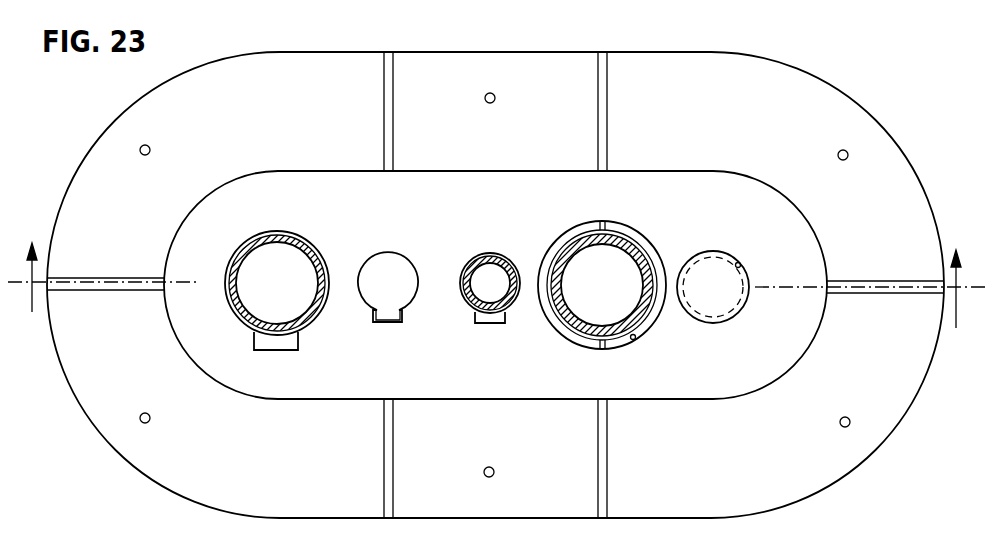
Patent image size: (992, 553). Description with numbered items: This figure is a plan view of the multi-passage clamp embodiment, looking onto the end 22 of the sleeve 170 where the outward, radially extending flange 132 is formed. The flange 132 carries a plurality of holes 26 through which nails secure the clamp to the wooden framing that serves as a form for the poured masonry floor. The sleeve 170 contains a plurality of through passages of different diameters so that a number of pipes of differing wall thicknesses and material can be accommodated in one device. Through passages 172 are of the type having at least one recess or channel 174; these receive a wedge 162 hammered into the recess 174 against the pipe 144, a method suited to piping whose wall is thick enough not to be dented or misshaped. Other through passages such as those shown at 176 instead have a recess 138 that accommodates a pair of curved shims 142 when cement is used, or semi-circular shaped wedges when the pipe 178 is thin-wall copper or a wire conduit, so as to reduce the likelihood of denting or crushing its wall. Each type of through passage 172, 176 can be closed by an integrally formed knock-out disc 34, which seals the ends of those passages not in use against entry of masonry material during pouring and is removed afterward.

The end of the sleeve 22 is at (497, 302).
The holes 26 is at (149, 146).
The knock out disc 34 is at (392, 278).
The flange 132 is at (324, 114).
The recess or channel 138 is at (634, 340).
The curved shims 142 is at (566, 238).
The pipe 144 is at (308, 243).
The wedge 162 is at (285, 342).
The sleeve 170 is at (195, 240).
The through passages 172 is at (236, 321).
The recess or channel 174 is at (387, 318).
The through passages 176 is at (720, 313).
The pipe 178 is at (562, 315).